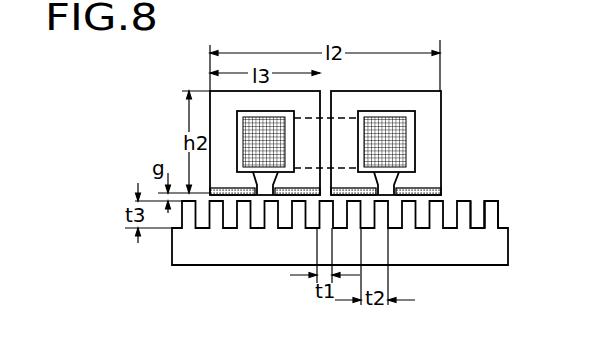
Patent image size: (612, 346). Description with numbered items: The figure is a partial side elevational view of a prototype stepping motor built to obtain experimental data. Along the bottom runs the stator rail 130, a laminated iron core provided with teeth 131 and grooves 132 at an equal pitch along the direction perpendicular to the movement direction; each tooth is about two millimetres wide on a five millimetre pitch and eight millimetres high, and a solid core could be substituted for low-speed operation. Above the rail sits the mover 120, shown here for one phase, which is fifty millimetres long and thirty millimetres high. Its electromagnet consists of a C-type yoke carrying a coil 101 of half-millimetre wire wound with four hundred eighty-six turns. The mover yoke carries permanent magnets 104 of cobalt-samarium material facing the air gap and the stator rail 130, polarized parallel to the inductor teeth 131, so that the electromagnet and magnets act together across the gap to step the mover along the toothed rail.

The mover 120 is at (508, 86).
The coil 101 is at (408, 138).
The permanent magnets 104 is at (444, 202).
The grooves 132 is at (451, 208).
The teeth 131 is at (495, 214).
The stator rail 130 is at (491, 253).